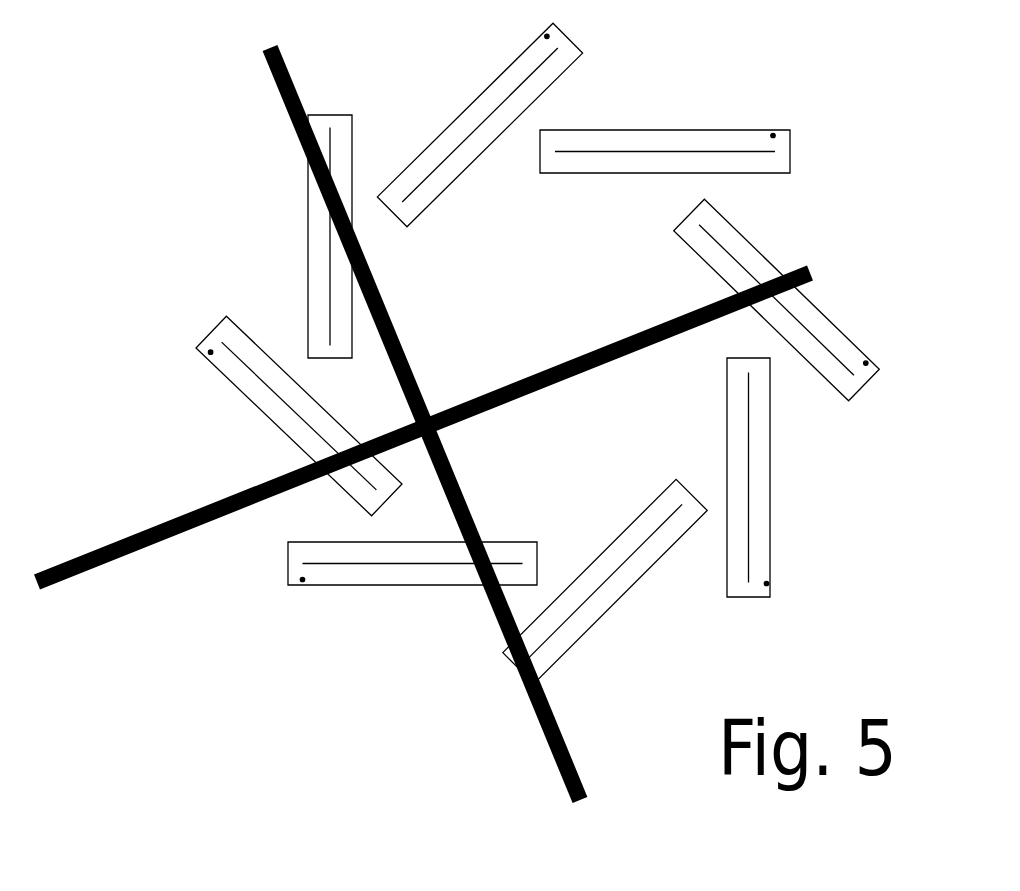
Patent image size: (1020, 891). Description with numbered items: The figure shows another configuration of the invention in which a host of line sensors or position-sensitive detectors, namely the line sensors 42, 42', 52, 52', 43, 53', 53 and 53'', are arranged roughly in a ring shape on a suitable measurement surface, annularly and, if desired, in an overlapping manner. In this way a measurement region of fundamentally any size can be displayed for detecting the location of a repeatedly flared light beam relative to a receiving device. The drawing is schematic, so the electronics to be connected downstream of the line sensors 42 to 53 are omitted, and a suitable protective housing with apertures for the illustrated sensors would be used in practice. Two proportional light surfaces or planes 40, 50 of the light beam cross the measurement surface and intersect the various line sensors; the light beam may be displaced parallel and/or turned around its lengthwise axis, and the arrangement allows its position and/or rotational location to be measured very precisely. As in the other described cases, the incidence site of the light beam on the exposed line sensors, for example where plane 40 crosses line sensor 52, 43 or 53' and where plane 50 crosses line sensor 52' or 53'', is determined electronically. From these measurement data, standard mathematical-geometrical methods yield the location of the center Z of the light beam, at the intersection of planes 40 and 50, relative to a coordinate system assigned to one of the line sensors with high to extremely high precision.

The light surface or plane 40 is at (375, 280).
The light surface or plane 50 is at (660, 324).
The line sensor 42 is at (665, 115).
The line sensor 42' is at (479, 125).
The line sensor 43 is at (350, 588).
The line sensor 52 is at (294, 236).
The line sensor 52' is at (273, 416).
The line sensor 53 is at (786, 477).
The line sensor 53' is at (605, 581).
The line sensor 53'' is at (777, 300).
The center of the light beam Z is at (439, 394).